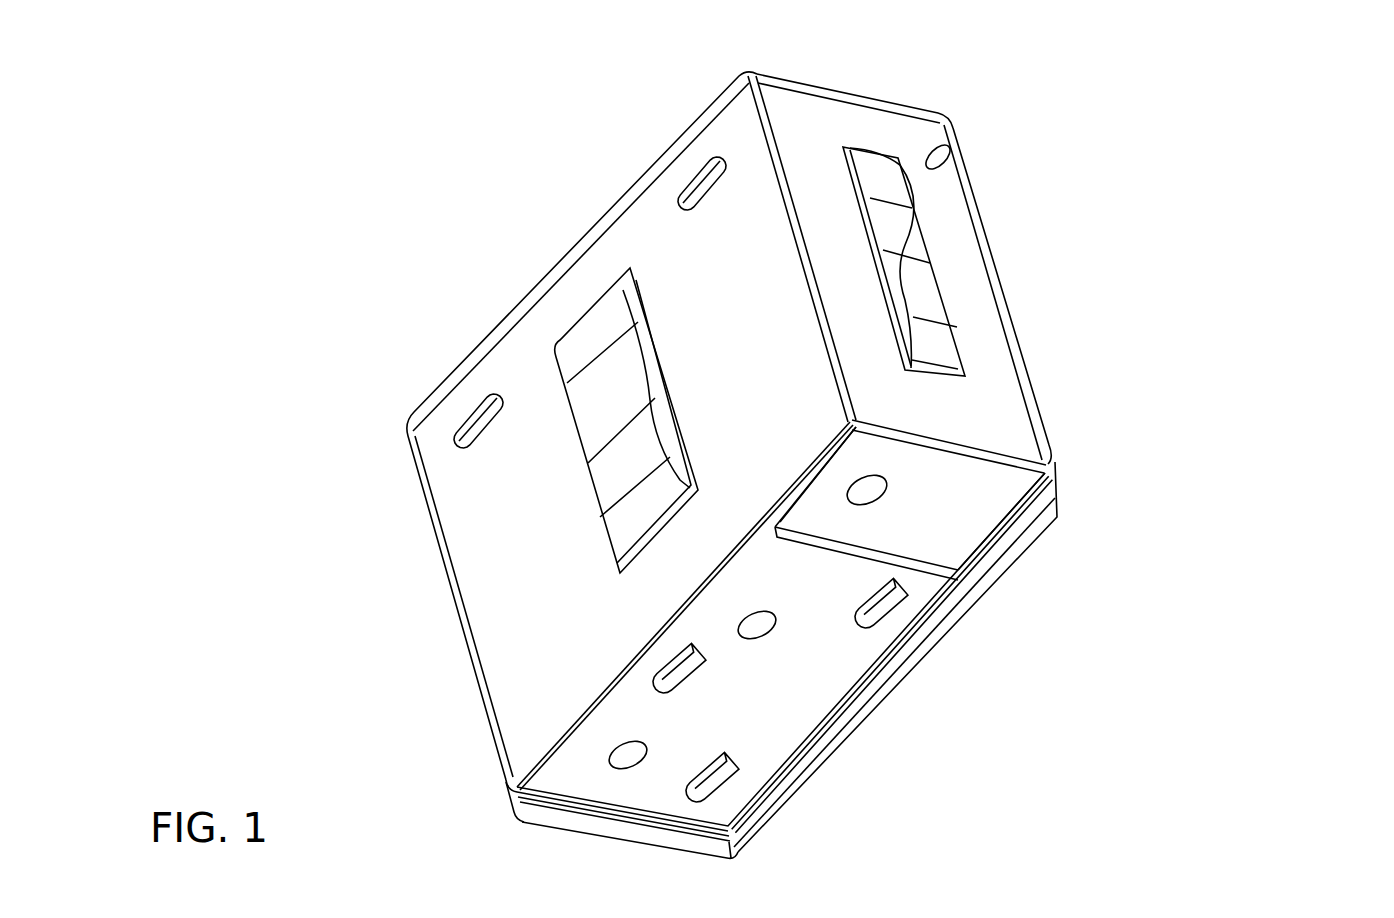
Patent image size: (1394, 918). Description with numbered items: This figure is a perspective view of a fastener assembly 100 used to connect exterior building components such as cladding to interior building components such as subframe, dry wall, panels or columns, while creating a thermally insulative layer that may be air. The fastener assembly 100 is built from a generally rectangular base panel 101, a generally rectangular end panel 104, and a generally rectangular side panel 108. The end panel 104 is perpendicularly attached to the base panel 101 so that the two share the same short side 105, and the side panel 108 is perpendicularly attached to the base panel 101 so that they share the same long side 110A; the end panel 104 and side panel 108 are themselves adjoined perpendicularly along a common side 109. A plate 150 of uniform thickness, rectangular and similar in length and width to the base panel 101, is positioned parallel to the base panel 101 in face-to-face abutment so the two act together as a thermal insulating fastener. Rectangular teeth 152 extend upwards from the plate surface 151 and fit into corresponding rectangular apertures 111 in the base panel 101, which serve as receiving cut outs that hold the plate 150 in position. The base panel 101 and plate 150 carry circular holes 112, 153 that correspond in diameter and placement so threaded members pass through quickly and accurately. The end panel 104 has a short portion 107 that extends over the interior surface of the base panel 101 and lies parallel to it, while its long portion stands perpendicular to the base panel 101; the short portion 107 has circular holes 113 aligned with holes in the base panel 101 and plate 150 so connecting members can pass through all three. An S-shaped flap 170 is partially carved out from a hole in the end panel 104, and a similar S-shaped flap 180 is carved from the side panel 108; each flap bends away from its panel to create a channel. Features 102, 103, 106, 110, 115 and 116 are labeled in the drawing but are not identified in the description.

The fastener assembly 100 is at (1062, 193).
The base panel 101 is at (820, 664).
The side edge of base plate 102 is at (860, 706).
The front edge of base plate 103 is at (567, 812).
The end panel 104 is at (977, 317).
The short side 105 is at (965, 441).
The lower edge of second side wall 106 is at (1033, 373).
The short portion of the end panel 107 is at (947, 505).
The side panel 108 is at (733, 272).
The common side 109 is at (807, 238).
The first side wall 110 is at (592, 222).
The long side 110A is at (675, 616).
The rectangular apertures 111 is at (722, 792).
The circular holes 112 is at (615, 748).
The circular holes 113 is at (890, 484).
The slot 115 is at (465, 410).
The hole 116 is at (960, 140).
The plate 150 is at (957, 608).
The plate surface 151 is at (938, 620).
The rectangular teeth 152 is at (742, 772).
The circular holes 153 is at (607, 757).
The S-shaped flap 170 is at (928, 284).
The S-shaped flap 180 is at (607, 408).